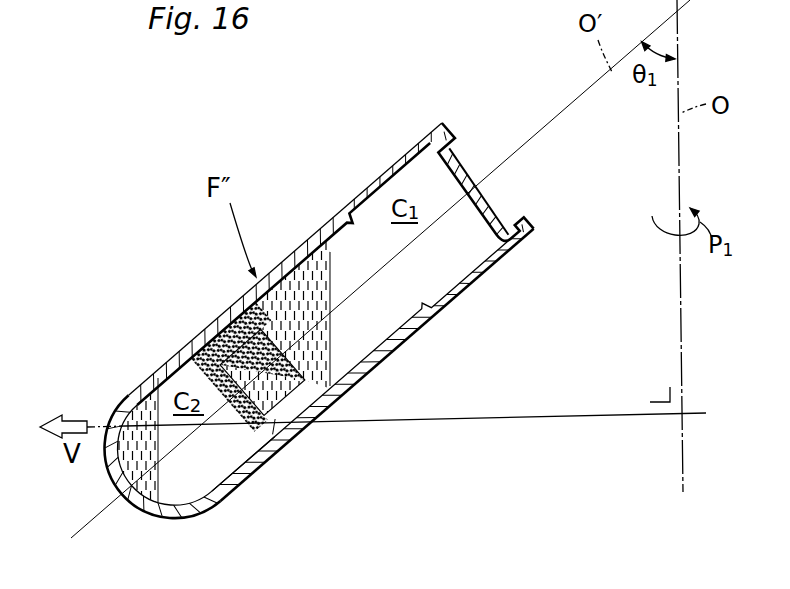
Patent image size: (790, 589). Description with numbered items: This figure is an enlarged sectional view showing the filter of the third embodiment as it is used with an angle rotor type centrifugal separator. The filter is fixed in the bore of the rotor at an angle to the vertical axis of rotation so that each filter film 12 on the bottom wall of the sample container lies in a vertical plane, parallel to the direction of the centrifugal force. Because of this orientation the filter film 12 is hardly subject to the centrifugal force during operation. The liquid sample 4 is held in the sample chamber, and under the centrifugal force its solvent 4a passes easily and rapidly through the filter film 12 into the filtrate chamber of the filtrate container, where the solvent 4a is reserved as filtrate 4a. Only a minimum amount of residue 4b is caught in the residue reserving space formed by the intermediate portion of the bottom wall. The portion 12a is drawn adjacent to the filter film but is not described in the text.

The liquid sample 4 is at (333, 275).
The solvent 4a is at (303, 296).
The residue 4b is at (214, 344).
The filter film 12 is at (294, 414).
The piston portion 12a is at (282, 383).